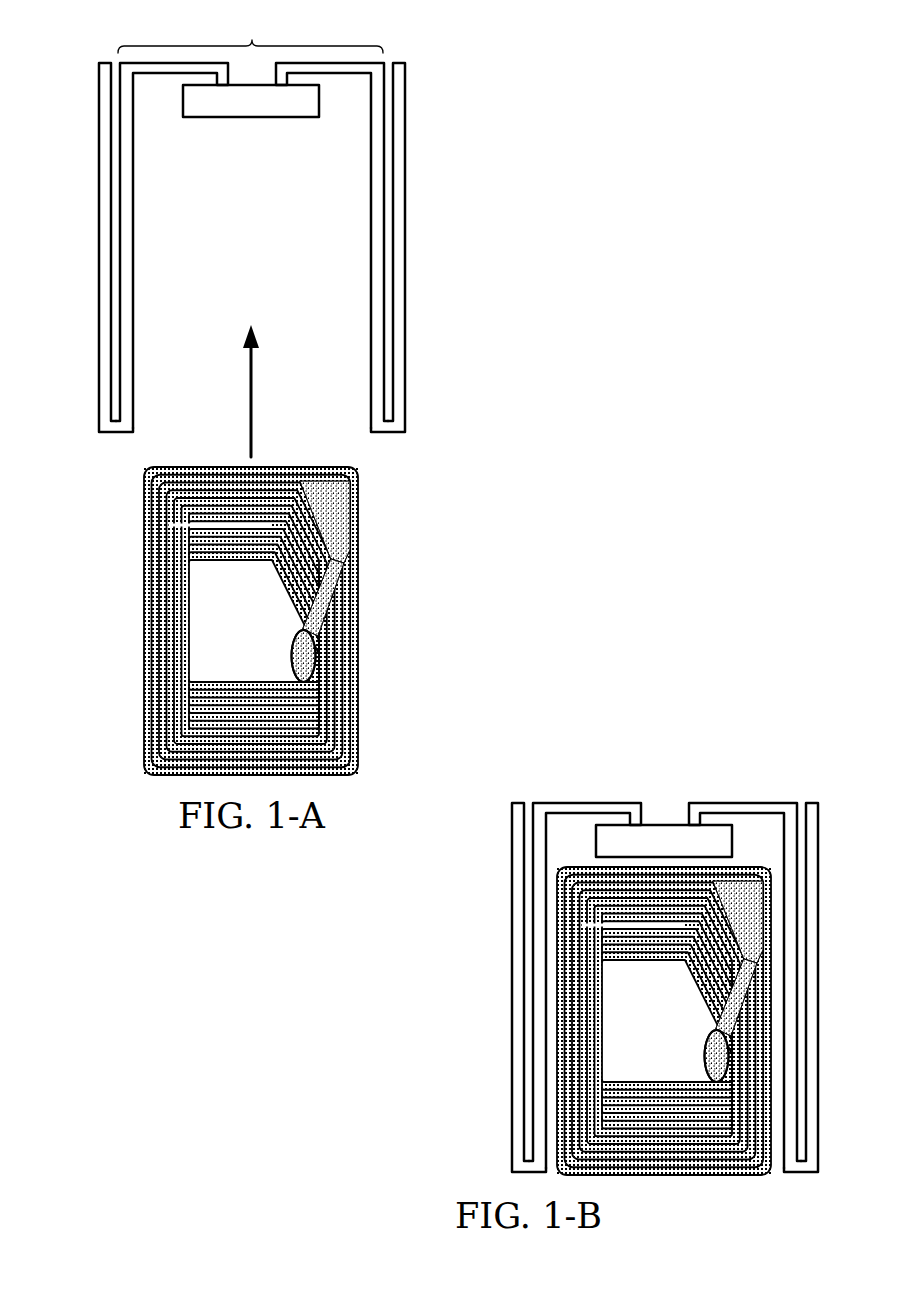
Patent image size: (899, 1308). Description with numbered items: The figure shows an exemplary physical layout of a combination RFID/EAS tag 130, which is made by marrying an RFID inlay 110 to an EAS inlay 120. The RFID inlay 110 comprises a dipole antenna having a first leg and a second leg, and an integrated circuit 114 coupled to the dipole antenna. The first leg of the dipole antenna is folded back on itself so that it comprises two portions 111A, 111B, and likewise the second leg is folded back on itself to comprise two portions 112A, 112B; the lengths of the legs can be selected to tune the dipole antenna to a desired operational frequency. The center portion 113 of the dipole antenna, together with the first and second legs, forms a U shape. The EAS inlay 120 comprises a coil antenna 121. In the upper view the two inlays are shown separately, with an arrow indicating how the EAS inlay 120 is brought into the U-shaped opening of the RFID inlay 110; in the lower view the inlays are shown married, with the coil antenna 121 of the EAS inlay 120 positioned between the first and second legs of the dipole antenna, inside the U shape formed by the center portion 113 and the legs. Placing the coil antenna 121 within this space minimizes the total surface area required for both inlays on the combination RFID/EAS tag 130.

In FIG. 1-A, the RFID inlay 110 is at (286, 221).
In FIG. 1-B, the RFID inlay 110 is at (468, 922).
In FIG. 1-A, the portion of first leg 111A is at (99, 308).
In FIG. 1-A, the portion of first leg 111B is at (133, 283).
In FIG. 1-A, the portion of second leg 112A is at (369, 283).
In FIG. 1-A, the portion of second leg 112B is at (404, 308).
In FIG. 1-A, the center portion of the dipole antenna 113 is at (250, 31).
In FIG. 1-A, the integrated circuit 114 is at (252, 118).
In FIG. 1-A, the EAS inlay 120 is at (278, 621).
In FIG. 1-B, the EAS inlay 120 is at (713, 1200).
In FIG. 1-A, the coil antenna 121 is at (146, 594).
In FIG. 1-B, the combination RFID/EAS tag 130 is at (610, 965).